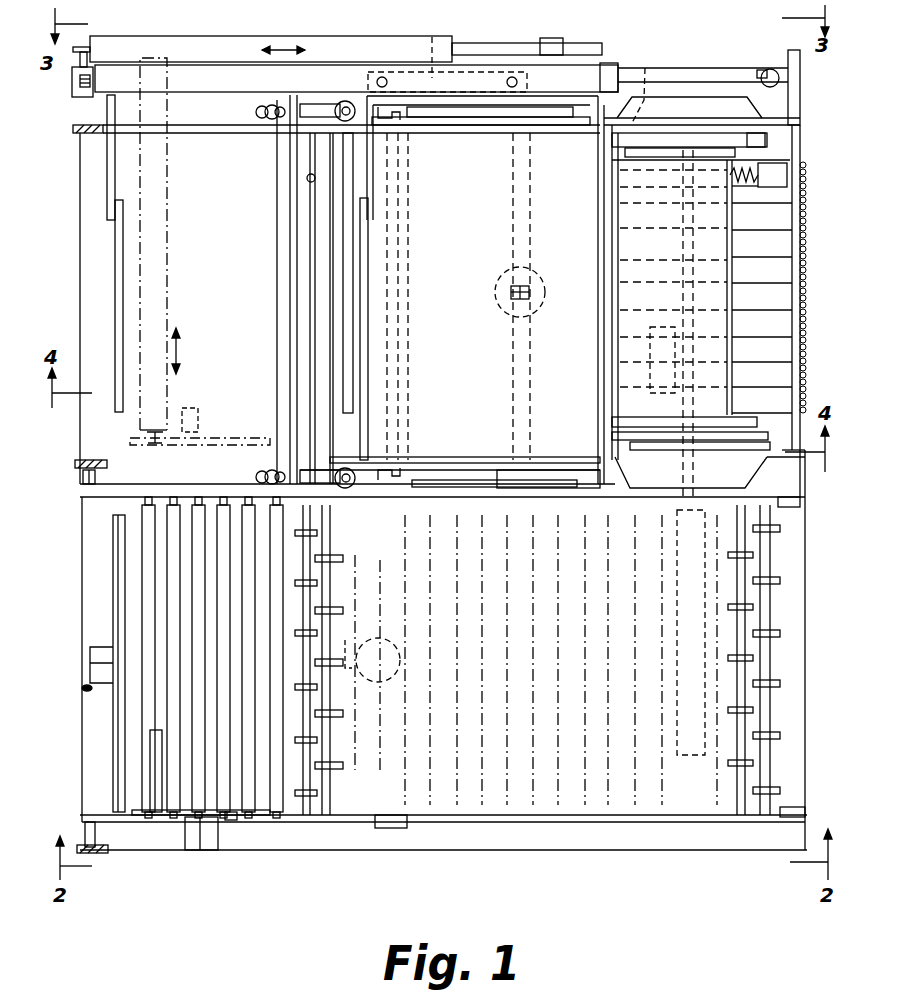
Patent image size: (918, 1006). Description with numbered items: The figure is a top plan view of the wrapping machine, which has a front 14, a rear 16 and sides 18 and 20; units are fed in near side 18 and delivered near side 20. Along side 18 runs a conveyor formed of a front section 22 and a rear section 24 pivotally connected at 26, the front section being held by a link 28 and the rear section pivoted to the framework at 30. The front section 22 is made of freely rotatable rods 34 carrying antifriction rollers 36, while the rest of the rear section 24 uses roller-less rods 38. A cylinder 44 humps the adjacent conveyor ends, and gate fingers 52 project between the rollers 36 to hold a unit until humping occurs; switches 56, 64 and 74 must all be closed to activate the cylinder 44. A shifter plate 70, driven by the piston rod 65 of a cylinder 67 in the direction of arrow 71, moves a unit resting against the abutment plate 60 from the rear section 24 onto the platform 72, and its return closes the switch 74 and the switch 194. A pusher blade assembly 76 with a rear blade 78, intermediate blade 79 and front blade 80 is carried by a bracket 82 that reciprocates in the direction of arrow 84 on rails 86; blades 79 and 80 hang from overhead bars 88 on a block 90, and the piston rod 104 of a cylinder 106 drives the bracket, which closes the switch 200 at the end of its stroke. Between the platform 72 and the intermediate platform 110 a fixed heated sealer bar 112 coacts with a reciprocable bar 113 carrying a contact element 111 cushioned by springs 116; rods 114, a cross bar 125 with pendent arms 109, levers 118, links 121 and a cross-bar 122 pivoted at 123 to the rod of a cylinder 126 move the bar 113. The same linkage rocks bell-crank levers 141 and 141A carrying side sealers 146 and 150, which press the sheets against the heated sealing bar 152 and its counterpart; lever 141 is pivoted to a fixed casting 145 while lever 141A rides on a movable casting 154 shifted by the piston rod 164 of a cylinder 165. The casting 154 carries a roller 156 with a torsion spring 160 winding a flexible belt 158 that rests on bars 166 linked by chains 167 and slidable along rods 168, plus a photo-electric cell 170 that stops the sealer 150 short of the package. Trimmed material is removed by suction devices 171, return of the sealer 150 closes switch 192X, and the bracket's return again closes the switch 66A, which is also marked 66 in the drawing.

The front 14 is at (810, 569).
The rear 16 is at (78, 438).
The side 18 is at (566, 856).
The side 20 is at (362, 36).
The front conveyor section 22 is at (545, 805).
The rear conveyor section 24 is at (158, 840).
The pivotal connection 26 is at (400, 500).
The link 28 is at (800, 810).
The pivot 30 is at (90, 822).
The rods 34 is at (305, 820).
The antifriction rollers 36 is at (332, 752).
The rods 38 is at (175, 585).
The cylinder 44 is at (393, 652).
The fingers 52 is at (334, 826).
The switch 56 is at (348, 640).
The abutment plate 60 is at (113, 536).
The switch 64 is at (90, 677).
The piston rod 65 is at (155, 447).
The bracket 66 is at (92, 650).
The switch 66A is at (82, 100).
The cylinder 67 is at (153, 294).
The shifter plate 70 is at (224, 440).
The arrow 71 is at (182, 350).
The platform 72 is at (222, 246).
The switch 74 is at (186, 838).
The pusher blade assembly 76 is at (122, 78).
The rear blade 78 is at (123, 266).
The intermediate blade 79 is at (365, 229).
The front blade 80 is at (612, 234).
The bracket 82 is at (222, 75).
The arrow 84 is at (285, 45).
The rails 86 is at (80, 80).
The overhead bars 88 is at (373, 176).
The block 90 is at (429, 45).
The piston rod 104 is at (483, 43).
The cylinder 106 is at (175, 42).
The pendent arms 109 is at (412, 120).
The intermediate platform 110 is at (470, 354).
The contact element 111 is at (307, 177).
The sealer bar 112 is at (345, 430).
The pressure bar 113 is at (286, 209).
The rods 114 is at (312, 103).
The springs 116 is at (268, 120).
The levers 118 is at (490, 107).
The links 121 is at (510, 500).
The cross-bar 122 is at (526, 351).
The pivotal connection 123 is at (498, 303).
The cross bar 125 is at (412, 254).
The cylinder 126 is at (500, 288).
The bell-crank lever 141 is at (740, 450).
The bell-crank lever 141A is at (735, 168).
The casting 145 is at (757, 468).
The side sealer 146 is at (608, 419).
The side sealer 150 is at (652, 150).
The heated sealing bar 152 is at (608, 440).
The casting 154 is at (685, 135).
The roller 156 is at (612, 183).
The belt 158 is at (614, 250).
The torsion spring 160 is at (740, 166).
The piston rod 164 is at (690, 298).
The cylinder 165 is at (690, 599).
The bars 166 is at (762, 308).
The chains 167 is at (806, 300).
The rods 168 is at (797, 326).
The photo-electric cell 170 is at (660, 160).
The suction devices 171 is at (745, 108).
The switch 192X is at (647, 85).
The switch 194 is at (222, 850).
The switch 200 is at (770, 69).